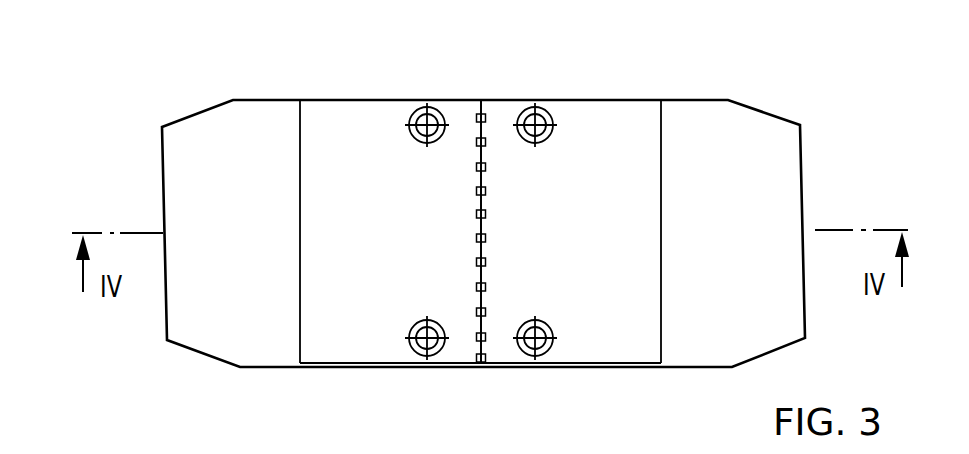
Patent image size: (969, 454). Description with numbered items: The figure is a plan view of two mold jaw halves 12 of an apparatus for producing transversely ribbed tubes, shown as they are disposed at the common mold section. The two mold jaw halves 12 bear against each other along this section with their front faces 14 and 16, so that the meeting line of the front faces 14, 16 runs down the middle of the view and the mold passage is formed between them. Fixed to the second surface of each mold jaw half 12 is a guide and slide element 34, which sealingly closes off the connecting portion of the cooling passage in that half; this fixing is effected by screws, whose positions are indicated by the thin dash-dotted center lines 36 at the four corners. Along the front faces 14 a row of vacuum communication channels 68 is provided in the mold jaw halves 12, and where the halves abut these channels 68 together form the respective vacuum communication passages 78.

The mold jaw half 12 is at (210, 128).
The guide and slide element 34 is at (338, 122).
The screw center line 36 is at (528, 123).
The front face 14 is at (481, 226).
The front face 16 is at (481, 227).
The vacuum communication channel 68 is at (471, 128).
The vacuum communication passage 78 is at (495, 303).